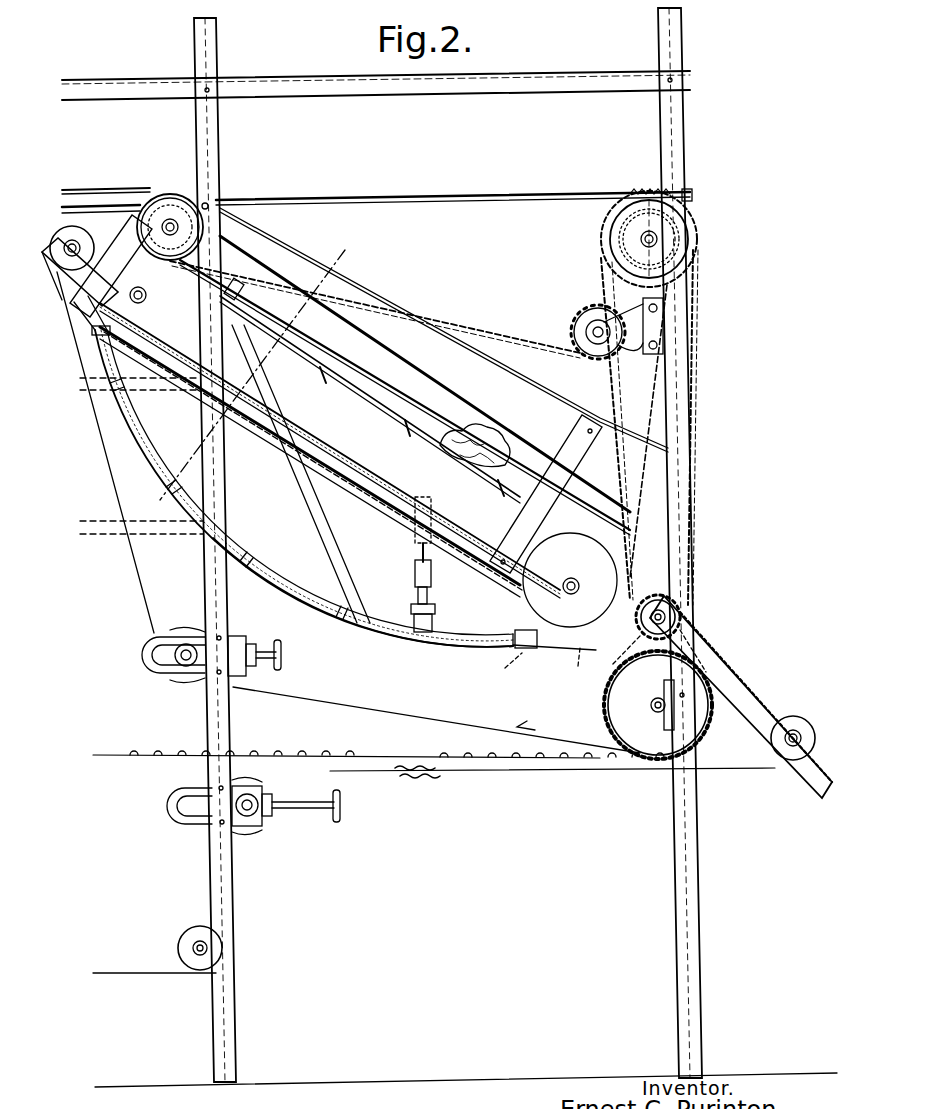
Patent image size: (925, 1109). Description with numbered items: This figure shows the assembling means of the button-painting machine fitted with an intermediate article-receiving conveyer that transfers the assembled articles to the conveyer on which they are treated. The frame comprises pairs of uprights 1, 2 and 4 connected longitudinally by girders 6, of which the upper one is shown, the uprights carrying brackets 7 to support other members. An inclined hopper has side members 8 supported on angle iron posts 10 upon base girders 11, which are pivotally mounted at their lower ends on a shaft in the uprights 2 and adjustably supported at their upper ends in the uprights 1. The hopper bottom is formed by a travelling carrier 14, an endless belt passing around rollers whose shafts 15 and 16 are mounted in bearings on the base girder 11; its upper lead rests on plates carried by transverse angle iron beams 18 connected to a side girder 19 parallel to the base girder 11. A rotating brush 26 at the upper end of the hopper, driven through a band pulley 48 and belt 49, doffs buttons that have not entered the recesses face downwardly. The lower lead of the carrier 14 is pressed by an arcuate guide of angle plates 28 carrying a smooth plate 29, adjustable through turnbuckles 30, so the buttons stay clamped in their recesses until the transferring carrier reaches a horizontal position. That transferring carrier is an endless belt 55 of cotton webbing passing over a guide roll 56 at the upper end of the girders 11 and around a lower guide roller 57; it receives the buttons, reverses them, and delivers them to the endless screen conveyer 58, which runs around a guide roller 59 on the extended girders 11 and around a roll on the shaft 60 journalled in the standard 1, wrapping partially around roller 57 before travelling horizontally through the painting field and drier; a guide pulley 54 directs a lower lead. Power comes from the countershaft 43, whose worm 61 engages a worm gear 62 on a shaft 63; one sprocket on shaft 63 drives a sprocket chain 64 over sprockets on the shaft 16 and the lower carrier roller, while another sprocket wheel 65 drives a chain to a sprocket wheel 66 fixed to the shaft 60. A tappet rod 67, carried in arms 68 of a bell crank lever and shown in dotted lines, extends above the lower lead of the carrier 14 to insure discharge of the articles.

The upright 1 is at (700, 1022).
The upright 2 is at (240, 1025).
The upright 4 is at (252, 378).
The girder 6 is at (566, 78).
The bracket 7 is at (197, 400).
The side member 8 is at (545, 392).
The post 10 is at (128, 246).
The base girder 11 is at (393, 494).
The travelling carrier 14 is at (311, 600).
The shaft 15 is at (578, 586).
The shaft 16 is at (141, 291).
The transverse angle iron beam 18 is at (405, 428).
The side girder 19 is at (306, 350).
The rotating brush 26 is at (206, 205).
The angle plate 28 is at (272, 575).
The smooth plate 29 is at (406, 636).
The turnbuckle 30 is at (432, 598).
The countershaft 43 is at (444, 198).
The band pulley 48 is at (163, 196).
The belt 49 is at (100, 189).
The guide pulley 54 is at (190, 925).
The endless belt 55 is at (100, 446).
The guide roll 56 is at (64, 232).
The guide roller 57 is at (606, 703).
The endless conveyer 58 is at (748, 662).
The guide roller 59 is at (805, 724).
The shaft 60 is at (678, 609).
The worm 61 is at (640, 190).
The worm gear 62 is at (608, 223).
The shaft 63 is at (642, 242).
The sprocket chain 64 is at (498, 332).
The sprocket wheel 65 is at (692, 254).
The sprocket wheel 66 is at (693, 618).
The tappet rod 67 is at (500, 671).
The arm 68 is at (580, 668).